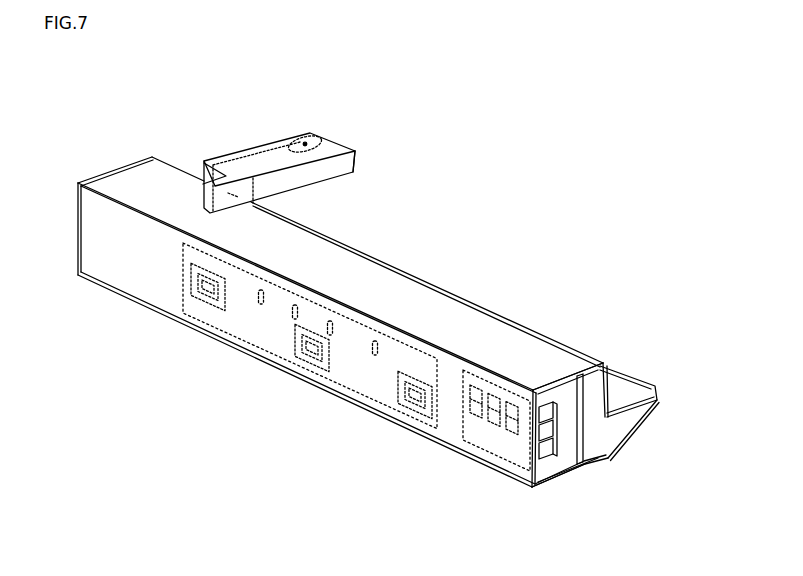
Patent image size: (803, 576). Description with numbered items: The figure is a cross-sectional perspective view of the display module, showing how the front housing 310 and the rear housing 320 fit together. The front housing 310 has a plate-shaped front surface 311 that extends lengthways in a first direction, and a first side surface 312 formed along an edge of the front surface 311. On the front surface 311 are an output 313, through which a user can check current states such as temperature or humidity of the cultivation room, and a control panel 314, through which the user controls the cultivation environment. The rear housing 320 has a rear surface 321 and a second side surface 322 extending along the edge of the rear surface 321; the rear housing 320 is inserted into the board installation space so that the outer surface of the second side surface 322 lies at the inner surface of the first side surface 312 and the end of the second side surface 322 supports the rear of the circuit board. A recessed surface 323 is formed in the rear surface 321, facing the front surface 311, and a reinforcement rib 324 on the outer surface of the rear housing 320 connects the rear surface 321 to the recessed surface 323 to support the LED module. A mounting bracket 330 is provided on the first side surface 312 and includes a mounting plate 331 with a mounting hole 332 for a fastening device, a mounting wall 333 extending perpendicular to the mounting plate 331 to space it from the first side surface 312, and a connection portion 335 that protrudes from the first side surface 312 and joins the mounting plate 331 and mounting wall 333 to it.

The front housing 310 is at (398, 333).
The front surface 311 is at (145, 280).
The first side surface 312 is at (123, 174).
The output 313 is at (491, 467).
The control panel 314 is at (333, 385).
The rear housing 320 is at (630, 413).
The rear surface 321 is at (651, 421).
The second side surface 322 is at (597, 363).
The recessed surface 323 is at (657, 391).
The reinforcement rib 324 is at (627, 371).
The mounting bracket 330 is at (309, 231).
The mounting plate 331 is at (247, 157).
The mounting hole 332 is at (300, 133).
The mounting wall 333 is at (328, 171).
The connection portion 335 is at (233, 195).